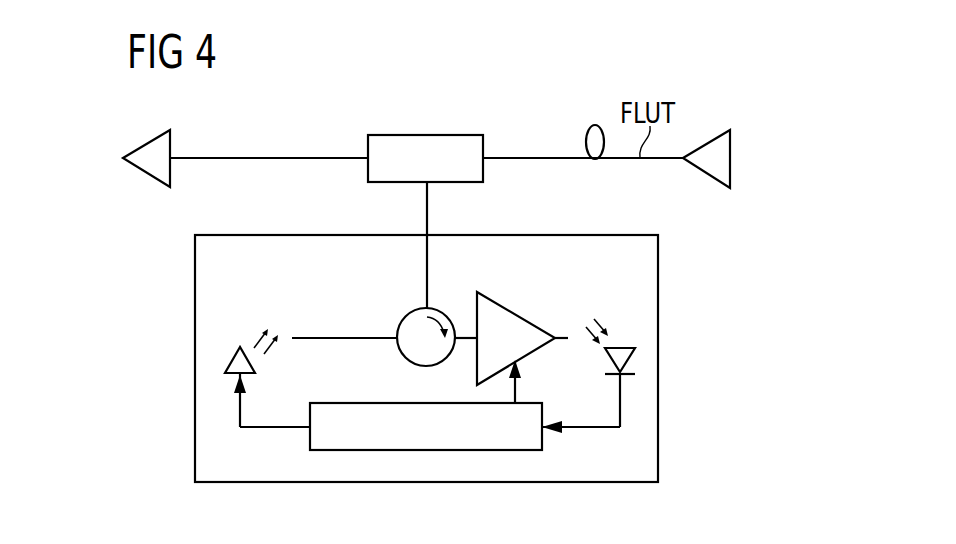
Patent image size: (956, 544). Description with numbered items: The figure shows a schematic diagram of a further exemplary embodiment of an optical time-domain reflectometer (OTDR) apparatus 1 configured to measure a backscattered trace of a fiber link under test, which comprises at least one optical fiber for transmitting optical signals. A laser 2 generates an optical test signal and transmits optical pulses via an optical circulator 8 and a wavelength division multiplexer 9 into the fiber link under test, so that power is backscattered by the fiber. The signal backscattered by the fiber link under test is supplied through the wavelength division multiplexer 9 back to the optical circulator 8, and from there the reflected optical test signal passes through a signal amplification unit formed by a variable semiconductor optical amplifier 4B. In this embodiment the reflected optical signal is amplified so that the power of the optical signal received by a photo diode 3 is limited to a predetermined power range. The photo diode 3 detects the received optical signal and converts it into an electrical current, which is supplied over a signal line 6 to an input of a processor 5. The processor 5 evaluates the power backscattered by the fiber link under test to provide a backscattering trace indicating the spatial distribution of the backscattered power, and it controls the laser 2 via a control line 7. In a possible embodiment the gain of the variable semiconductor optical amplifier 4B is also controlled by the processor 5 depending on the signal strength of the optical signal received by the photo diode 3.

The optical time-domain reflectometer apparatus 1 is at (688, 302).
The laser 2 is at (232, 347).
The photo diode 3 is at (617, 348).
The variable semiconductor optical amplifier 4B is at (512, 310).
The processor 5 is at (310, 438).
The signal line 6 is at (595, 427).
The control line 7 is at (275, 427).
The optical circulator 8 is at (403, 315).
The wavelength division multiplexer 9 is at (427, 135).